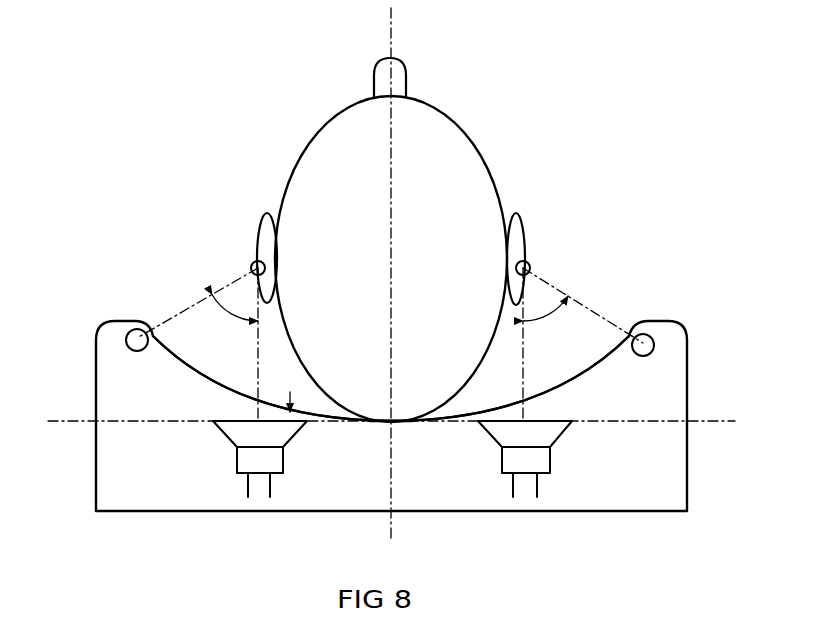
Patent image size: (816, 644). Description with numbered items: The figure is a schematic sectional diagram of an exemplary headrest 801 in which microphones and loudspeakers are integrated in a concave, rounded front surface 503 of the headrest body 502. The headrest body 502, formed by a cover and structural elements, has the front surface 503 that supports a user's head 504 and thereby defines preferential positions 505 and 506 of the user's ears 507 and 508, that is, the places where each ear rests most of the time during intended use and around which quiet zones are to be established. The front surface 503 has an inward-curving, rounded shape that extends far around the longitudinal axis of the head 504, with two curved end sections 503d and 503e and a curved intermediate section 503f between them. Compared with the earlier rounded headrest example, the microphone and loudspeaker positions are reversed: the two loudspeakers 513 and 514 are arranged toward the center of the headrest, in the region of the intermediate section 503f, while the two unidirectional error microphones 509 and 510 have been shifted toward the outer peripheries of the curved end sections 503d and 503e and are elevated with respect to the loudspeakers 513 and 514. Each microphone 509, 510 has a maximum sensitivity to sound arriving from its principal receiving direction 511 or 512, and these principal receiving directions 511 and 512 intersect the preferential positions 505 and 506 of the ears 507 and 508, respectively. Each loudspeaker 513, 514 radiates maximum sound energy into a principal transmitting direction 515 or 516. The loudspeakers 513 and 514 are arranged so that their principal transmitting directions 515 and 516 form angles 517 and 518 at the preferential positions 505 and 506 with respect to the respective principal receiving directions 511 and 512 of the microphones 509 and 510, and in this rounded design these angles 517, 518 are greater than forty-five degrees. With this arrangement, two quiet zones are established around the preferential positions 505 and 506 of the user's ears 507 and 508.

The headrest 801 is at (74, 501).
The headrest body 502 is at (673, 487).
The front surface 503 is at (364, 425).
The curved end section 503d is at (250, 340).
The curved end section 503e is at (532, 338).
The curved intermediate section 503f is at (284, 389).
The user's head 504 is at (453, 160).
The preferential position 505 is at (251, 268).
The preferential position 506 is at (530, 268).
The user's ear 507 is at (258, 242).
The user's ear 508 is at (521, 238).
The unidirectional microphone 509 is at (136, 351).
The unidirectional microphone 510 is at (644, 356).
The principal receiving direction 511 is at (185, 310).
The principal receiving direction 512 is at (600, 320).
The loudspeaker 513 is at (233, 432).
The loudspeaker 514 is at (497, 431).
The principal transmitting direction 515 is at (258, 390).
The principal transmitting direction 516 is at (522, 388).
The angle 517 is at (240, 344).
The angle 518 is at (543, 344).